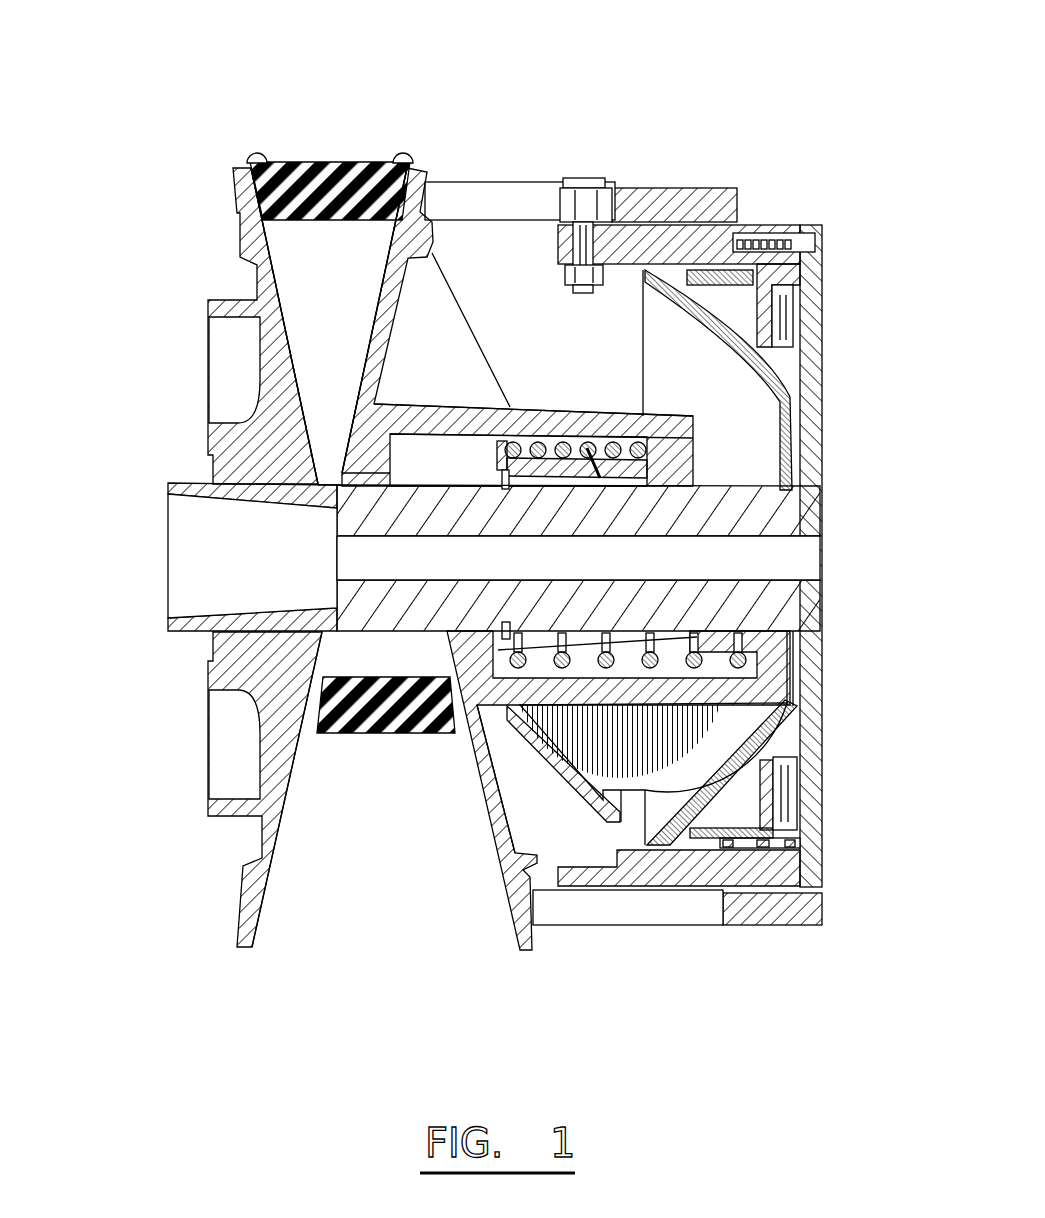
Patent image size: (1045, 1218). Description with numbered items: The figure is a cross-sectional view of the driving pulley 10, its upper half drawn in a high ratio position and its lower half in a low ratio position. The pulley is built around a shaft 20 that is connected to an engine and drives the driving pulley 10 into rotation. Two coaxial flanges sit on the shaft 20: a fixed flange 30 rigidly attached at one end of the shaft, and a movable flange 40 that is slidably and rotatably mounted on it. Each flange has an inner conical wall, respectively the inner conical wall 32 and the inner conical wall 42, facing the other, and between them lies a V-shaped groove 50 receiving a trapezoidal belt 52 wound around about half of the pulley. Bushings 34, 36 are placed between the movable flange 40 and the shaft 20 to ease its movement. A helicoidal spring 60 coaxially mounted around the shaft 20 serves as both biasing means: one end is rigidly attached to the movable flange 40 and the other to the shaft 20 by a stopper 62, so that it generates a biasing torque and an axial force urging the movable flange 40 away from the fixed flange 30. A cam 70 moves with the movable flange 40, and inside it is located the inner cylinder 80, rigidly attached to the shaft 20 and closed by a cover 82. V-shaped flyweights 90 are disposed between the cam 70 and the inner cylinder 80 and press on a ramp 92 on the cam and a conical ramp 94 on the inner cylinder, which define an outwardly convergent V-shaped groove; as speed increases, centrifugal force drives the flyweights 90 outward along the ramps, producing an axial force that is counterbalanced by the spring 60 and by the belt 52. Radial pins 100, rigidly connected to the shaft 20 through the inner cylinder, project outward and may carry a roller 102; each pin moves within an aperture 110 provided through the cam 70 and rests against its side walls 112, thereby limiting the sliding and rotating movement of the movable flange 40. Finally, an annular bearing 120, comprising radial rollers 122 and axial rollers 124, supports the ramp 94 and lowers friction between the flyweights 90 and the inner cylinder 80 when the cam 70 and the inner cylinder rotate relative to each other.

The driving pulley 10 is at (230, 98).
The shaft 20 is at (345, 552).
The fixed flange 30 is at (238, 237).
The inner conical wall 32 is at (318, 280).
The bushing 34 is at (342, 479).
The bushing 36 is at (698, 478).
The movable flange 40 is at (429, 185).
The inner conical wall 42 is at (369, 320).
The V-shaped groove 50 is at (339, 352).
The trapezoidal belt 52 is at (326, 160).
The helicoidal spring 60 is at (566, 446).
The stopper 62 is at (497, 452).
The cam 70 is at (663, 188).
The inner cylinder 80 is at (752, 225).
The cover 82 is at (823, 448).
The flyweight 90 is at (603, 803).
The ramp 92 is at (553, 758).
The ramp 94 is at (714, 318).
The radial pin 100 is at (583, 178).
The roller 102 is at (547, 183).
The aperture 110 is at (506, 216).
The side wall 112 is at (437, 228).
The annular bearing 120 is at (800, 280).
The radial roller 122 is at (822, 315).
The axial roller 124 is at (782, 226).